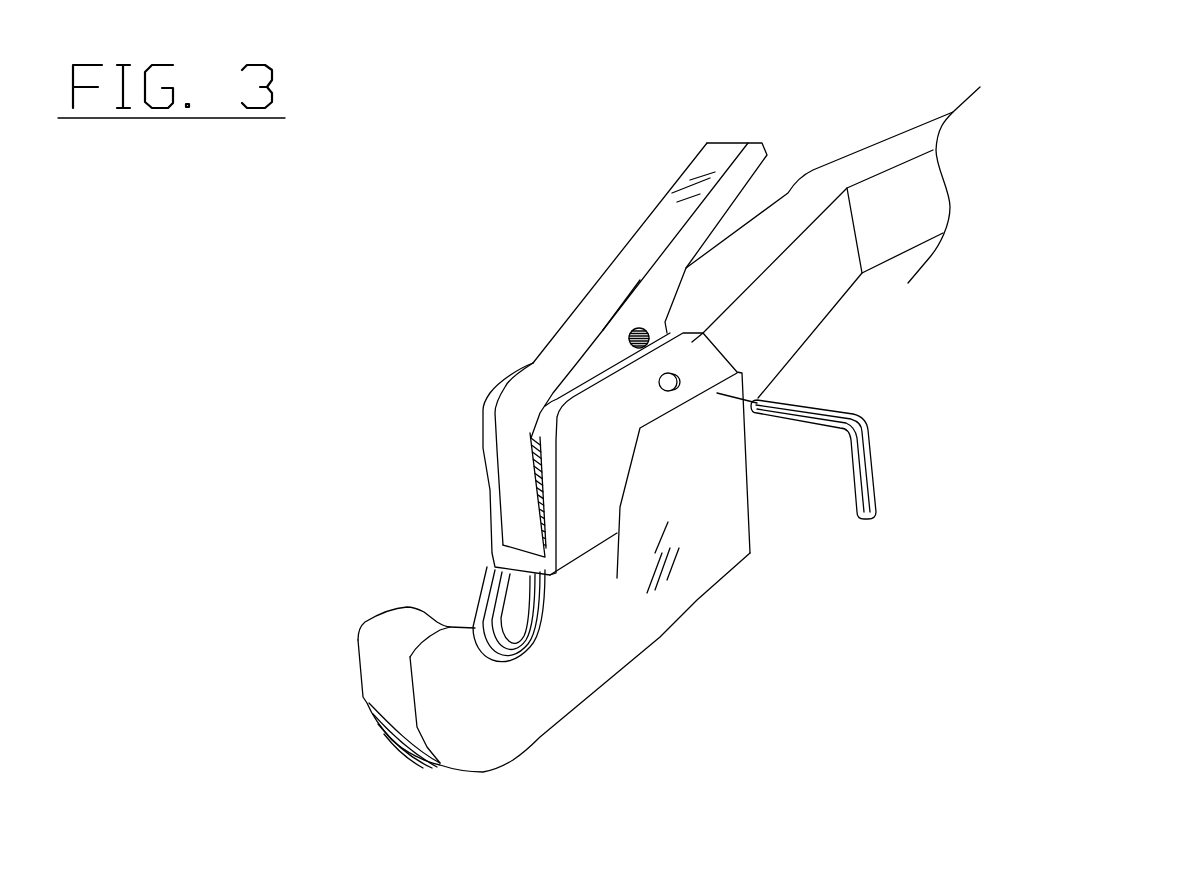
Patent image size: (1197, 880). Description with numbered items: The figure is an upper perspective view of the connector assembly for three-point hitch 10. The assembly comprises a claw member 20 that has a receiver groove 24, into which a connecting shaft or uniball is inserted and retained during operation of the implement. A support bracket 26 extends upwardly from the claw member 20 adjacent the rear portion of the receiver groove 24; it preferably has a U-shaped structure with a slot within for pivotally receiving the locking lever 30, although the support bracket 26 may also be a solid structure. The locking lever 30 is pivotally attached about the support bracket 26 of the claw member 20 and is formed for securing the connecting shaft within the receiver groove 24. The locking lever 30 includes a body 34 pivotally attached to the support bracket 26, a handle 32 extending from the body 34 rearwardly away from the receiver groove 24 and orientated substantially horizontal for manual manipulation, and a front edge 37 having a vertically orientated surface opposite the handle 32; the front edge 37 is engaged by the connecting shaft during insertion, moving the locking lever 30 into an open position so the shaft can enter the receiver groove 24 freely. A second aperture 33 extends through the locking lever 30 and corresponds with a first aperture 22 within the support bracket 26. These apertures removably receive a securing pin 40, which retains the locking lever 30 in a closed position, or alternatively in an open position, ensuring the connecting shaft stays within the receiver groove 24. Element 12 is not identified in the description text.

The connector assembly for three-point hitch 10 is at (1034, 184).
The handle 12 is at (820, 298).
The claw member 20 is at (492, 786).
The first aperture 22 is at (670, 397).
The receiver groove 24 is at (495, 630).
The support bracket 26 is at (493, 448).
The locking lever 30 is at (628, 233).
The handle 32 is at (668, 196).
The second aperture 33 is at (655, 342).
The body 34 is at (607, 345).
The front edge 37 is at (505, 495).
The securing pin 40 is at (873, 460).